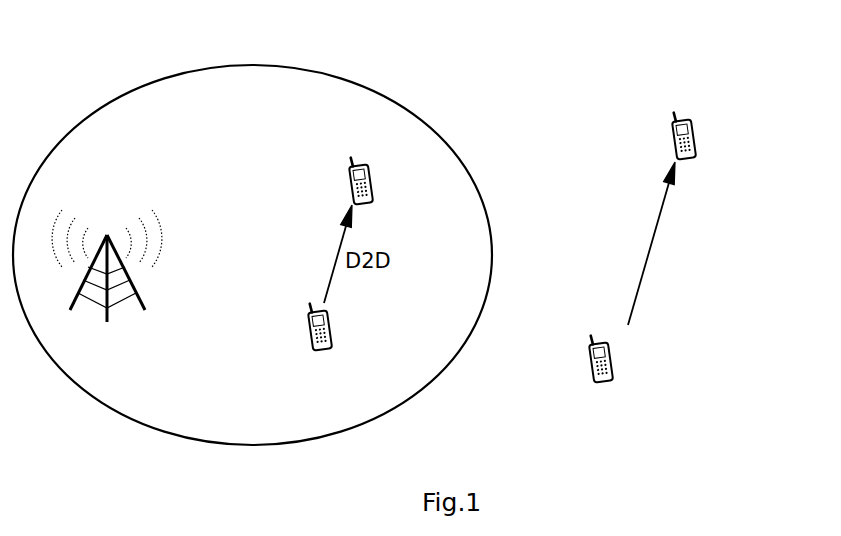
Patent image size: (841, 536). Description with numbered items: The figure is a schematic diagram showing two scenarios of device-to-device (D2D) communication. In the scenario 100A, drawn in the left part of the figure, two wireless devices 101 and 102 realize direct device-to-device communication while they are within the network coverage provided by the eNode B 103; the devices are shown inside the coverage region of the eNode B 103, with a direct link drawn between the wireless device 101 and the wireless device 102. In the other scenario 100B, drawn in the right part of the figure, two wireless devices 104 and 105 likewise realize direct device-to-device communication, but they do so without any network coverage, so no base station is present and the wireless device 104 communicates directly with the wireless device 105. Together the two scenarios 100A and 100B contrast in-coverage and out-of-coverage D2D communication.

The scenario 100A is at (252, 65).
The scenario 100B is at (713, 72).
The wireless device 101 is at (333, 338).
The wireless device 102 is at (370, 176).
The eNode B 103 is at (130, 212).
The wireless device 104 is at (611, 358).
The wireless device 105 is at (697, 135).